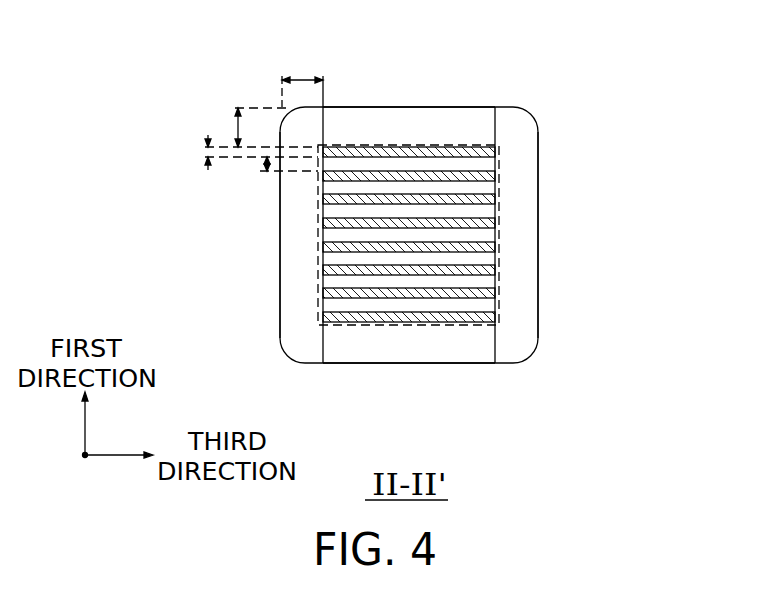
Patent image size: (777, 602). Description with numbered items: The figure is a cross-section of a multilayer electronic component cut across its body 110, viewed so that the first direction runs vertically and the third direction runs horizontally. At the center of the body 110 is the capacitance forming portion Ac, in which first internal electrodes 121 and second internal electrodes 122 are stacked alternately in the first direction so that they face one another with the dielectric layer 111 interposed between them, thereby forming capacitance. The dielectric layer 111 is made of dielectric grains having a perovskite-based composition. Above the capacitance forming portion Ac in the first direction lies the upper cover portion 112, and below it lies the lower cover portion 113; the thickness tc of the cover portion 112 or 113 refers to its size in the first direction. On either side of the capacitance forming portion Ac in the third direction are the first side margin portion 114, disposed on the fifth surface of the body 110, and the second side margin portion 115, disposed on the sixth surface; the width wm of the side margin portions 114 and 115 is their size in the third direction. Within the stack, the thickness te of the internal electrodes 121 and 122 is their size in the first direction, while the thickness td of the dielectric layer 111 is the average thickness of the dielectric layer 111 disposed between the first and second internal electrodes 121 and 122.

The body 110 is at (392, 107).
The dielectric layer 111 is at (488, 188).
The upper cover portion 112 is at (338, 118).
The lower cover portion 113 is at (375, 347).
The first side margin portion 114 is at (287, 272).
The second side margin portion 115 is at (530, 267).
The first internal electrode 121 is at (443, 150).
The second internal electrode 122 is at (463, 173).
The width of side margin portions wm is at (302, 80).
The thickness of cover portion tc is at (252, 127).
The thickness of internal electrodes te is at (250, 152).
The thickness of dielectric layer td is at (280, 169).
The capacitance forming portion Ac is at (314, 233).